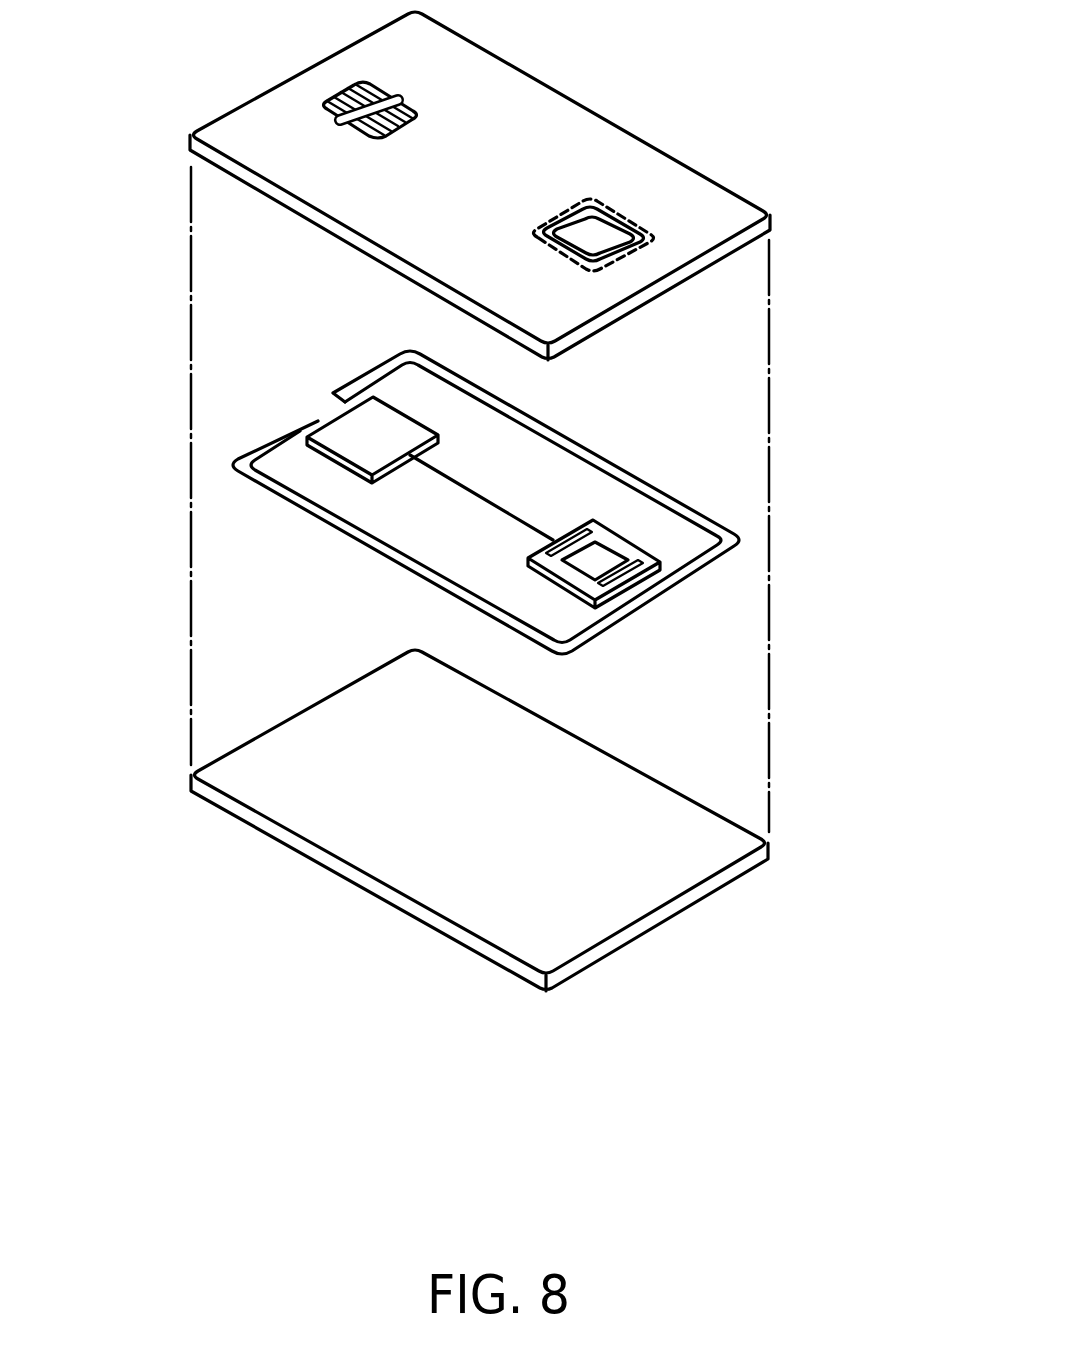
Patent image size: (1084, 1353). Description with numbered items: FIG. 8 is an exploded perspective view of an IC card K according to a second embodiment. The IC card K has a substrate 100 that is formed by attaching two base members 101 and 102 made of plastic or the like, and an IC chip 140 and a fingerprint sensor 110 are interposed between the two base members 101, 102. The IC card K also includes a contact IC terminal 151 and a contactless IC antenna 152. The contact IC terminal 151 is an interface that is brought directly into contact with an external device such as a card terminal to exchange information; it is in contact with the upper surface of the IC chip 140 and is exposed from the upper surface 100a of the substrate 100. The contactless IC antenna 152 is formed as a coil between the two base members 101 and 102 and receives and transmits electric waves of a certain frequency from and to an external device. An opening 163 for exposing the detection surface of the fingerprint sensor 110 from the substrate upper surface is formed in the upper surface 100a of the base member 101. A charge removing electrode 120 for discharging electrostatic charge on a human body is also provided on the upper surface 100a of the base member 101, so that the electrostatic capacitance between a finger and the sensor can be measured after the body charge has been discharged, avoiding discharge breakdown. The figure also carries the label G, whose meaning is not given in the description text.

The IC card K is at (146, 217).
The substrate 100 is at (842, 362).
The upper surface 100a is at (555, 152).
The base member 101 is at (623, 312).
The base member 102 is at (702, 803).
The fingerprint sensor 110 is at (603, 553).
The charge removing electrode 120 is at (625, 255).
The IC chip 140 is at (357, 443).
The contact IC terminal 151 is at (400, 99).
The contactless IC antenna 152 is at (705, 575).
The opening 163 is at (602, 235).
The gap G is at (613, 587).